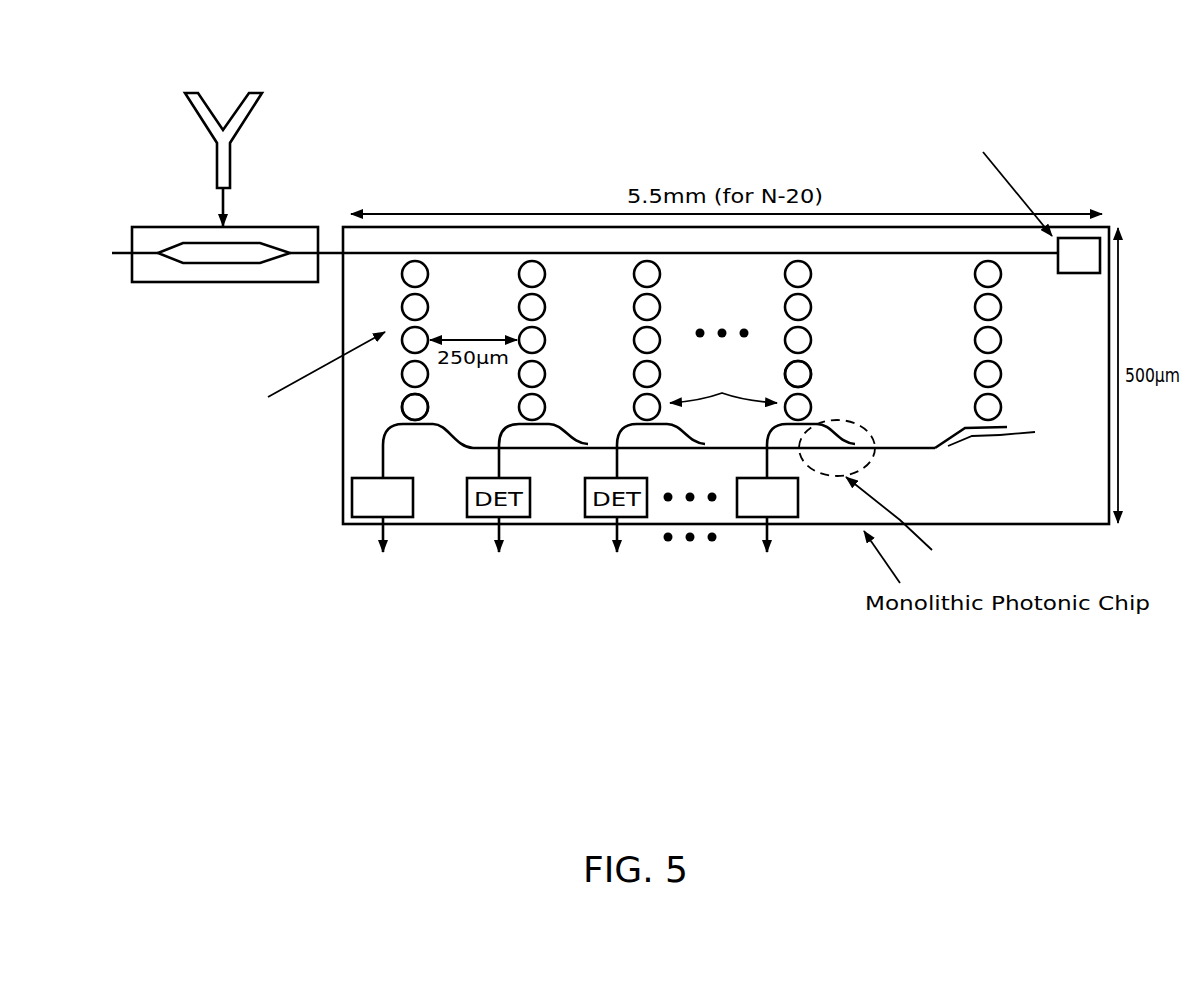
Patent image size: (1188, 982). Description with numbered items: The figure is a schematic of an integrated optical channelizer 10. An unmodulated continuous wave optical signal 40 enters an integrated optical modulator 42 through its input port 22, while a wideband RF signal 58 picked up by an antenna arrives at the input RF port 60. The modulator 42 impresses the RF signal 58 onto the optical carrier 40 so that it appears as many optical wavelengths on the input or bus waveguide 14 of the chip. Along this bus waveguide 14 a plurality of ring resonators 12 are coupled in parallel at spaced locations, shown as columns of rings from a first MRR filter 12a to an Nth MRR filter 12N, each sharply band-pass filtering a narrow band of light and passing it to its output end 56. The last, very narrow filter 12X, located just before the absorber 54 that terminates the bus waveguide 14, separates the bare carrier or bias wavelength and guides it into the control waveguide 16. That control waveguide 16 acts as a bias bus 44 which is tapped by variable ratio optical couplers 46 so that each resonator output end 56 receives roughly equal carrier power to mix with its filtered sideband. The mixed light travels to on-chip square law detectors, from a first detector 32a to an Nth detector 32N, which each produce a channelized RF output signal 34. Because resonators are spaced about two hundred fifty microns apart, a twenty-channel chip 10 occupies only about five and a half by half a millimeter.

The signal channelizer 10 is at (1097, 138).
The ring resonators 12 is at (916, 286).
The first MRR filter 12a is at (395, 408).
The Nth MRR filter 12N is at (812, 373).
The optical carrier ring resonator filter 12X is at (1002, 305).
The input waveguide 14 is at (388, 253).
The control waveguide 16 is at (917, 447).
The input port 22 is at (120, 252).
The first square law detector 32a is at (350, 512).
The Nth square law detector 32N is at (799, 502).
The output RF filtered signal 34 is at (745, 619).
The CW optical signal 40 is at (115, 259).
The integrated optical modulator 42 is at (290, 226).
The bias bus 44 is at (1032, 436).
The variable ratio optical couplers 46 is at (567, 428).
The absorber 54 is at (1110, 226).
The output end 56 is at (723, 384).
The wideband RF signal 58 is at (127, 141).
The input RF port 60 is at (228, 224).